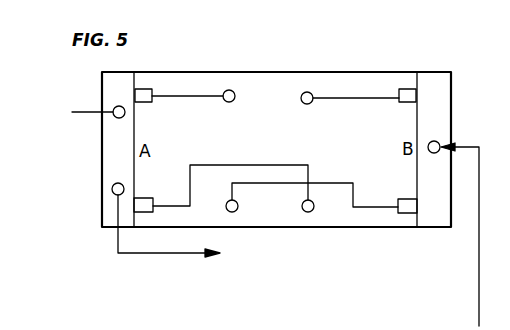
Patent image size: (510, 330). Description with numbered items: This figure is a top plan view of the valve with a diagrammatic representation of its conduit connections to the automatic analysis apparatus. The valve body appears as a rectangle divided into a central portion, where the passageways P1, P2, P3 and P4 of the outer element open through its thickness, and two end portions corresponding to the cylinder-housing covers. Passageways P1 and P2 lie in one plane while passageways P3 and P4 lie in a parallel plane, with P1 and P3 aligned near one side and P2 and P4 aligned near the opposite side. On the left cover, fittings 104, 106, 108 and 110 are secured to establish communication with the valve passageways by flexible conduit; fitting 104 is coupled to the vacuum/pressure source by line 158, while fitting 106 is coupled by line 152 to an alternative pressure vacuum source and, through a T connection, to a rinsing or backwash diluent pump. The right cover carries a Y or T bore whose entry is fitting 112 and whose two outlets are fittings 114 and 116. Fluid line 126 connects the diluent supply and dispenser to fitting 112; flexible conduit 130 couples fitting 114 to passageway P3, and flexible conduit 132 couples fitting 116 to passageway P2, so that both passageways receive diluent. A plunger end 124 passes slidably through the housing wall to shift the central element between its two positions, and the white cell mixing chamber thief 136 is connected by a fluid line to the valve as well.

The fitting 104 is at (114, 108).
The line 158 is at (100, 111).
The fitting 106 is at (113, 186).
The line 152 is at (190, 254).
The fitting 108 is at (151, 88).
The plunger end 124 is at (170, 96).
The passageway P1 is at (233, 101).
The flexible conduit 130 is at (333, 98).
The passageway P3 is at (311, 103).
The fitting 114 is at (403, 89).
The fitting 112 is at (440, 142).
The fluid line 126 is at (479, 260).
The fitting 110 is at (143, 198).
The white cell mixing chamber thief 136 is at (240, 165).
The passageway P2 is at (236, 211).
The passageway P4 is at (312, 211).
The flexible conduit 132 is at (380, 207).
The fitting 116 is at (407, 213).